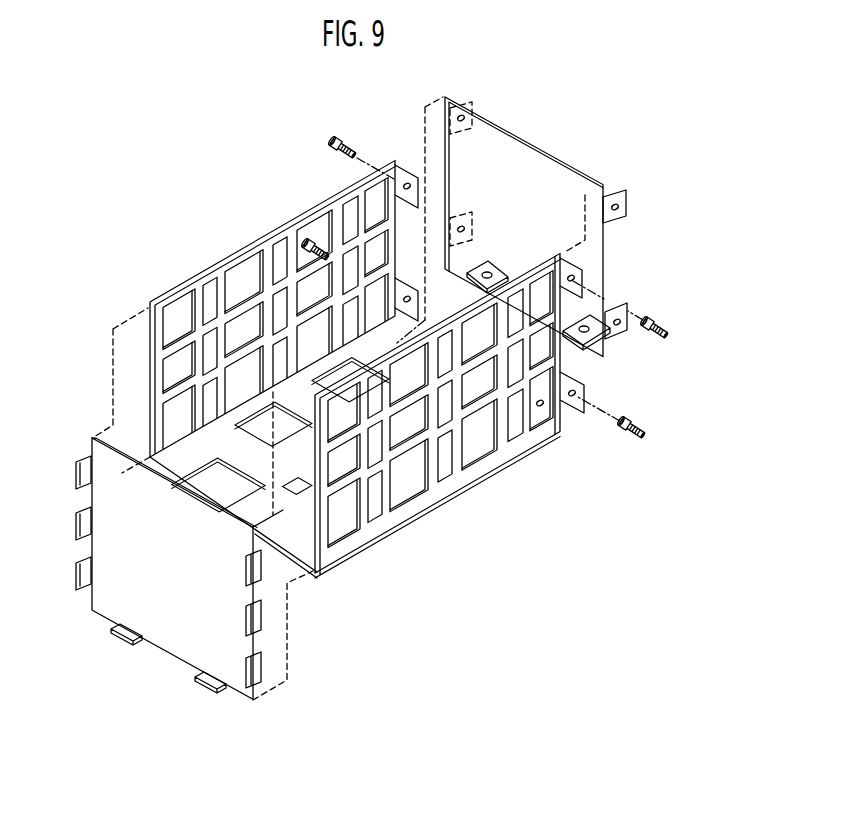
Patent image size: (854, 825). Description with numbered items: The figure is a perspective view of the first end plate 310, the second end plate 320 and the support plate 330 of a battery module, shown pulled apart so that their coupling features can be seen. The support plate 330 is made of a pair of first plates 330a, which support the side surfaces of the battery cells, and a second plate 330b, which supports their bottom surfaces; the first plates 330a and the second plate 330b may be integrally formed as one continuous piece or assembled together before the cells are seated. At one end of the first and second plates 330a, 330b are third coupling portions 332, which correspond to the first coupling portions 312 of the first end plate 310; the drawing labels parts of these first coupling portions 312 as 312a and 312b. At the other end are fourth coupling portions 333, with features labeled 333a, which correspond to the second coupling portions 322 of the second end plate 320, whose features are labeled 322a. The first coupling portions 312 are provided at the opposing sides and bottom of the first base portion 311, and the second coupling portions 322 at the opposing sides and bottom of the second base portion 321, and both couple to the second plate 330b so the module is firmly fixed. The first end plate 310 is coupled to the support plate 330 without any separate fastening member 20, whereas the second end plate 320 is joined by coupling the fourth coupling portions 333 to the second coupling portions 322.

The separate fastening member 20 is at (648, 432).
The first end plate 310 is at (141, 574).
The first base portion 311 is at (102, 497).
The first coupling portion 312 is at (141, 613).
The bottom tab portion 312a is at (82, 588).
The side tab portion 312b is at (72, 568).
The second end plate 320 is at (564, 225).
The second base portion 321 is at (513, 145).
The second coupling portion 322 is at (468, 112).
The fastening hole of tab 322a is at (624, 206).
The support plate 330 is at (351, 369).
The first plate 330a is at (351, 367).
The second plate 330b is at (237, 440).
The third coupling portion 332 is at (226, 484).
The fourth coupling portion 333 is at (409, 168).
The fastening hole of ear 333a is at (409, 191).